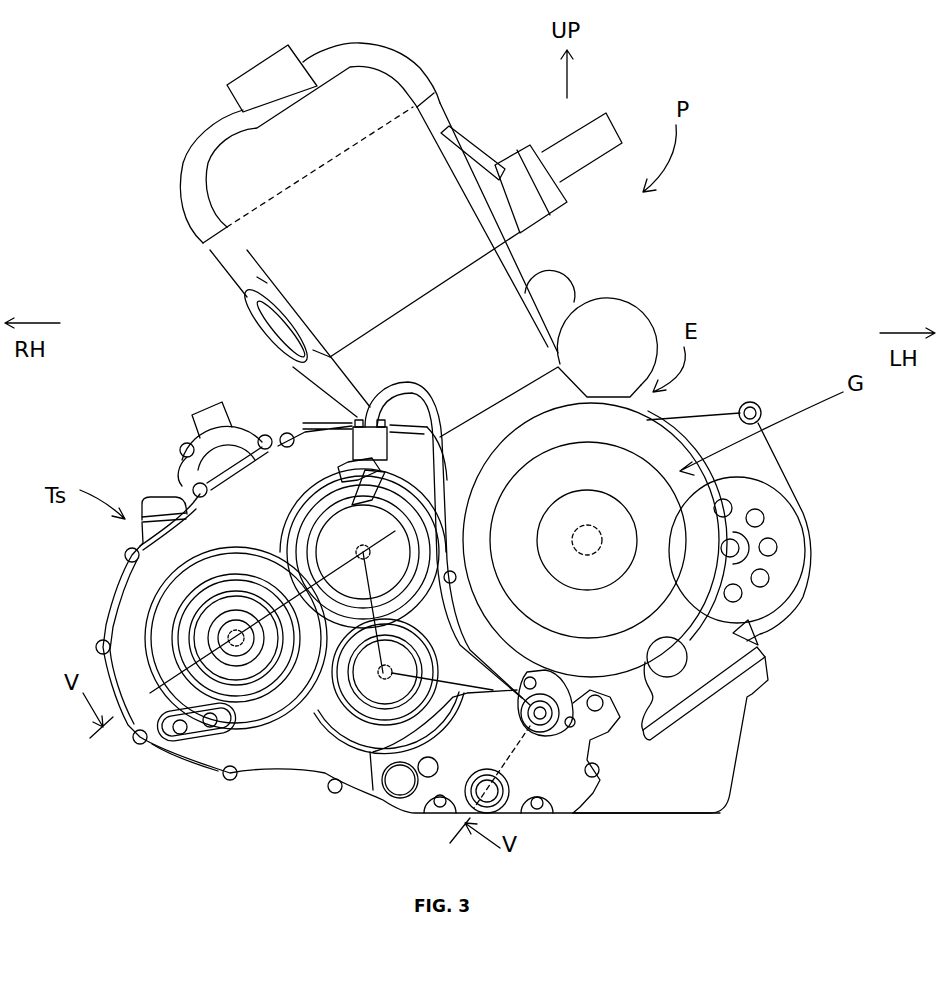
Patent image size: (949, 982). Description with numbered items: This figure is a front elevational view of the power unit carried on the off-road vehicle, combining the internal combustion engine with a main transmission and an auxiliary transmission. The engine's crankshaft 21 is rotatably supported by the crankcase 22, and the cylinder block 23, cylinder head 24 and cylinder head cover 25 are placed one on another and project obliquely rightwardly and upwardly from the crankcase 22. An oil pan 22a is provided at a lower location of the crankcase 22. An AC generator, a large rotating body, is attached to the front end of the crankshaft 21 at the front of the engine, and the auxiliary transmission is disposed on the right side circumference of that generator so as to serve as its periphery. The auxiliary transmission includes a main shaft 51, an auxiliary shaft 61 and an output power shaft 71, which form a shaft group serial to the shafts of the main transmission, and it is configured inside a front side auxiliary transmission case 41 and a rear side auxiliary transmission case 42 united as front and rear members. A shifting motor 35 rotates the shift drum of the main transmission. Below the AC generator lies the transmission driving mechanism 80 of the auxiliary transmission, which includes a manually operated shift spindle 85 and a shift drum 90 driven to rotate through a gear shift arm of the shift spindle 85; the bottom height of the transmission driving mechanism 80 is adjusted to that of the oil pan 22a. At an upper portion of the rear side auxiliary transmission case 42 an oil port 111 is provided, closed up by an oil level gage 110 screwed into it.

The crankshaft 21 is at (592, 536).
The crankcase 22 is at (782, 470).
The oil pan 22a is at (732, 797).
The cylinder block 23 is at (523, 270).
The cylinder head 24 is at (447, 103).
The cylinder head cover 25 is at (405, 52).
The shifting motor 35 is at (237, 423).
The front side auxiliary transmission case 41 is at (192, 507).
The rear side auxiliary transmission case 42 is at (173, 757).
The main shaft 51 is at (362, 548).
The auxiliary shaft 61 is at (385, 672).
The output power shaft 71 is at (232, 636).
The transmission driving mechanism 80 is at (530, 836).
The shift spindle 85 is at (507, 797).
The shift drum 90 is at (548, 722).
The oil level gage 110 is at (143, 500).
The oil port 111 is at (143, 517).